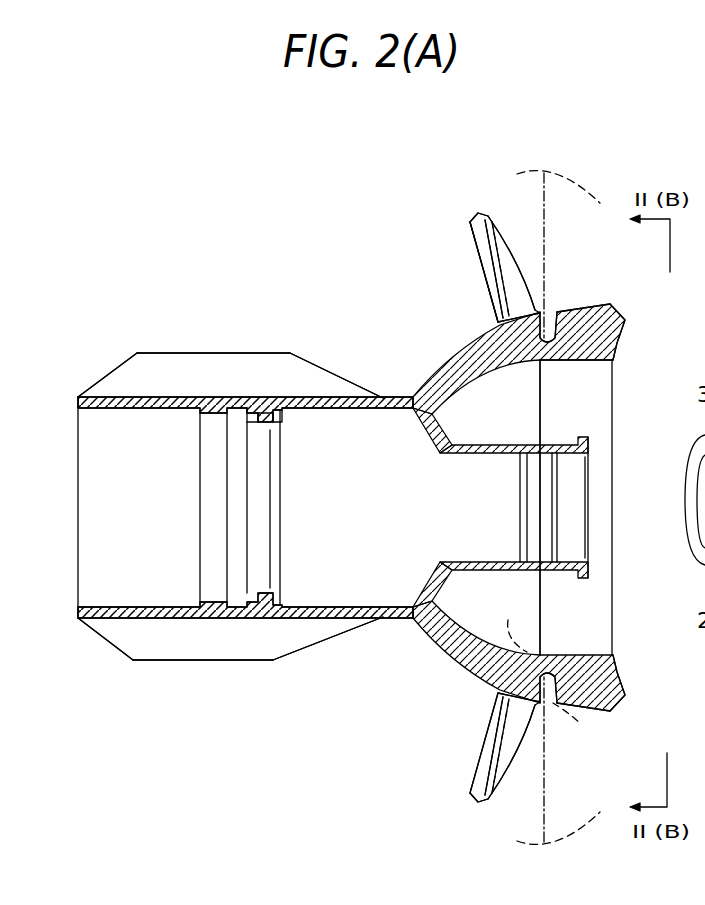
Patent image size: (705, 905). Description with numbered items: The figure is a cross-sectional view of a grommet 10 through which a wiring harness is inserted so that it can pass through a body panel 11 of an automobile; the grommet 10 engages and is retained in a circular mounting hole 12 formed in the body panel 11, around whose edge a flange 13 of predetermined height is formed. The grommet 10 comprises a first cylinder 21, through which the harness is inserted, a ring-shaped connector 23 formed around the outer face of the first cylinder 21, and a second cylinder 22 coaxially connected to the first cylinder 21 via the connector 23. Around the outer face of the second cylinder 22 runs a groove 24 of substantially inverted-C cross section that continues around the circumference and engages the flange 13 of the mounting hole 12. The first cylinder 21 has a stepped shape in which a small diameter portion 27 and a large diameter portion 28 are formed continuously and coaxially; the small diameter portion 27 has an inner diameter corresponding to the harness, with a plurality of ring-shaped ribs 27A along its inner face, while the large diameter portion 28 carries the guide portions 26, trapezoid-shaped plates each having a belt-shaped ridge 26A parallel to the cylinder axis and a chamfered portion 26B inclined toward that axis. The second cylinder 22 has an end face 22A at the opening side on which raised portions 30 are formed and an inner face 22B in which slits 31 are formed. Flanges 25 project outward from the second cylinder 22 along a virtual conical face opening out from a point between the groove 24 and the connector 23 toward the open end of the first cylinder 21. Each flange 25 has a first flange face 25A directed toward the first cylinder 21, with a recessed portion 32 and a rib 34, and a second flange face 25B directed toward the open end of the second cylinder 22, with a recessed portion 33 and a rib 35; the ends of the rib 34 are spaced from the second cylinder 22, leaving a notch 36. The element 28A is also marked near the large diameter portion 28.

The grommet 10 is at (148, 246).
The body panel 11 is at (585, 203).
The mounting hole 12 is at (513, 622).
The flange 13 is at (571, 729).
The first cylinder 21 is at (298, 352).
The second cylinder 22 is at (447, 352).
The end face 22A is at (614, 304).
The inner face 22B is at (573, 362).
The connector 23 is at (420, 382).
The groove 24 is at (545, 326).
The flange 25 is at (500, 178).
The first flange face 25A is at (467, 220).
The second flange face 25B is at (495, 187).
The guide portion 26 is at (268, 285).
The belt-shaped ridge 26A is at (232, 352).
The chamfered portion 26B is at (122, 355).
The small diameter portion 27 is at (522, 444).
The ring-shaped rib 27A is at (587, 505).
The large diameter portion 28 is at (262, 622).
The engaging projection 28A is at (290, 525).
The raised portion 30 is at (623, 333).
The slit 31 is at (598, 361).
The recessed portion 32 is at (490, 263).
The recessed portion 33 is at (501, 250).
The rib 34 is at (490, 283).
The rib 35 is at (506, 258).
The notch 36 is at (503, 330).